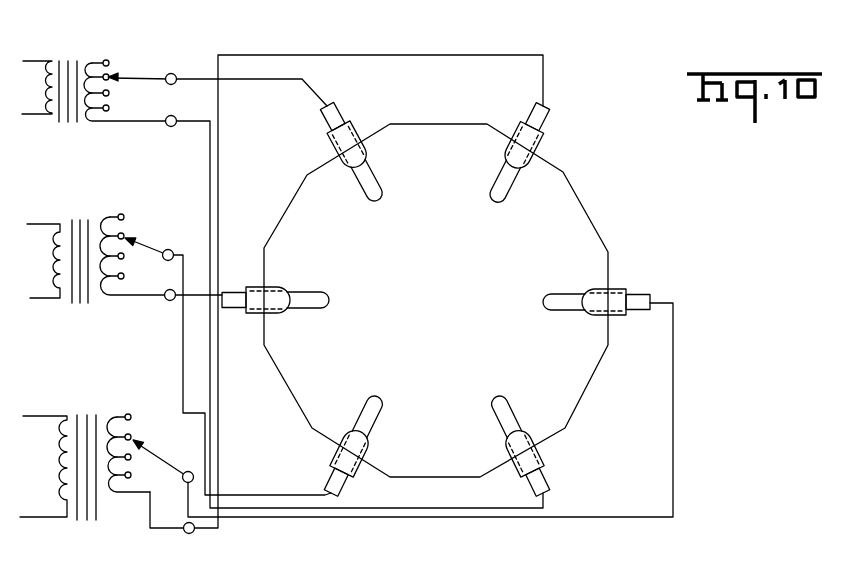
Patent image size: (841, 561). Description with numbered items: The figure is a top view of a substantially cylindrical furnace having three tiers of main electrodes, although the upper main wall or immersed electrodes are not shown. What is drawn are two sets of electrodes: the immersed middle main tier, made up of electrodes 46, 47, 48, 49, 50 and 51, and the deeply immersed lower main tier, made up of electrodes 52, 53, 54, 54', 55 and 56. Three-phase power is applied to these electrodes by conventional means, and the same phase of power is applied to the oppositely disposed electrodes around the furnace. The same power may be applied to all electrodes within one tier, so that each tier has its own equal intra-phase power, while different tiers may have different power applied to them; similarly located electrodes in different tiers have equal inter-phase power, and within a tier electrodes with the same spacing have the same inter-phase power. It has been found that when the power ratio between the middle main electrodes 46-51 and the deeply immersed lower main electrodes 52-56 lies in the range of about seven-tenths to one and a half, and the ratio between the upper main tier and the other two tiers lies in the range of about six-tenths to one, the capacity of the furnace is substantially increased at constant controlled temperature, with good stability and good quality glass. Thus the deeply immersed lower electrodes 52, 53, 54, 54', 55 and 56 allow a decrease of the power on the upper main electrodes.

The middle main tier electrode 46 is at (533, 165).
The middle main tier electrode 47 is at (604, 293).
The middle main tier electrode 48 is at (527, 441).
The middle main tier electrode 49 is at (366, 444).
The middle main tier electrode 50 is at (272, 313).
The middle main tier electrode 51 is at (353, 172).
The lower main tier electrode 52 is at (496, 205).
The lower main tier electrode 53 is at (541, 292).
The lower main tier electrode 54 is at (506, 390).
The lower main tier electrode 54' is at (393, 412).
The lower main tier electrode 55 is at (307, 313).
The lower main tier electrode 56 is at (378, 201).